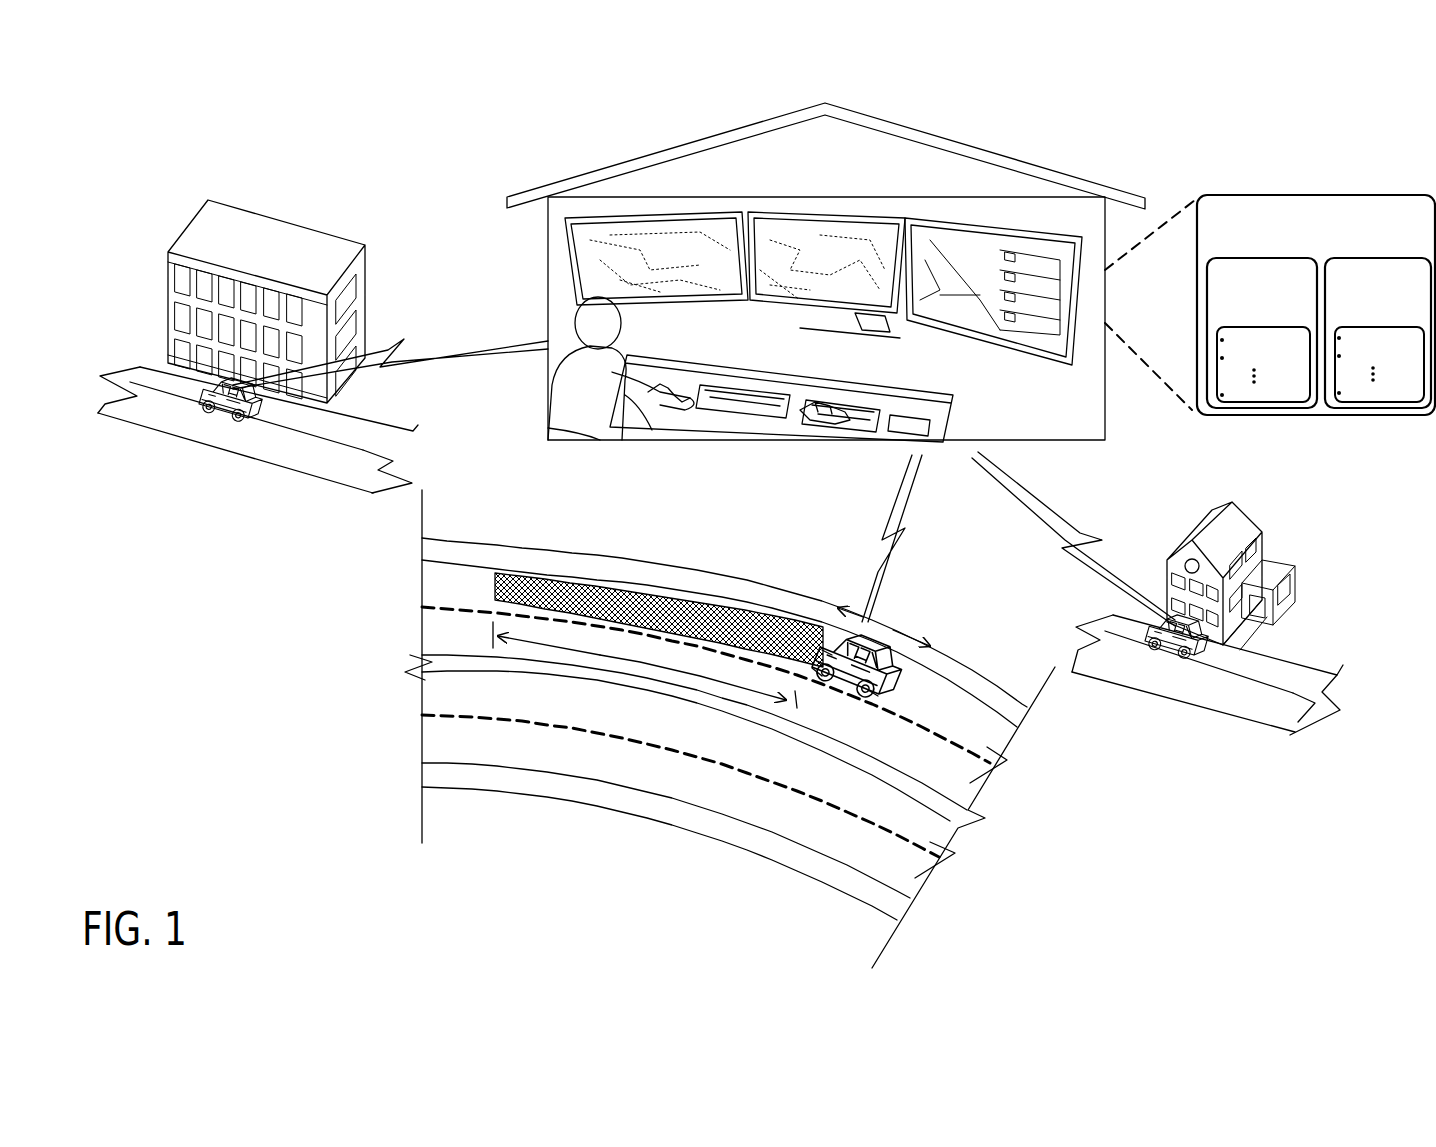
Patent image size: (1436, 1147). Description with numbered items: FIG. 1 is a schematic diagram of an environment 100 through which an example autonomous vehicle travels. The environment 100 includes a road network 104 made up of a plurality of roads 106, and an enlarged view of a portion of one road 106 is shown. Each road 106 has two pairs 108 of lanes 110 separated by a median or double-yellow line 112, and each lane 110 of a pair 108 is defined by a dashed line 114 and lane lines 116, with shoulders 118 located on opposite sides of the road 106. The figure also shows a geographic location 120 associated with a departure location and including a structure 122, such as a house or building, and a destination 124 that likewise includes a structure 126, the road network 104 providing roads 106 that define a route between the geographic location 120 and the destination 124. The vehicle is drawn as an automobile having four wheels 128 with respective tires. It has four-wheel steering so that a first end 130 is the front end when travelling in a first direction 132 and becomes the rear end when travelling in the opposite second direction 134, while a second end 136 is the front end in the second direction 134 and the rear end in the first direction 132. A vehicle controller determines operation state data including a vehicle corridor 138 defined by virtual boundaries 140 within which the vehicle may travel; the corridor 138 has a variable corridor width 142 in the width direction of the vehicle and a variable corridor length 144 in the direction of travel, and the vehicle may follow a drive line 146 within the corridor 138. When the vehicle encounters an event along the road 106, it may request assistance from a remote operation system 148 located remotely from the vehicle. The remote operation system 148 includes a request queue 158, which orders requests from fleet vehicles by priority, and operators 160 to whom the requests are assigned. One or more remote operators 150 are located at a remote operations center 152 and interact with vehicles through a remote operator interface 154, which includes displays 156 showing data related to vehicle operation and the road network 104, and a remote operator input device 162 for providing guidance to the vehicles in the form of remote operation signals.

The environment 100 is at (155, 118).
The road network 104 is at (266, 488).
The road 106 is at (152, 413).
The pair of lanes 108 is at (400, 602).
The lane 110 is at (1007, 760).
The median or double-yellow line 112 is at (770, 717).
The dashed line 114 is at (436, 606).
The lane lines 116 is at (711, 810).
The shoulder 118 is at (548, 558).
The geographic location 120 is at (1276, 515).
The structure 122 is at (1191, 548).
The destination 124 is at (144, 235).
The structure 126 is at (262, 232).
The wheel 128 is at (818, 673).
The first end 130 is at (827, 650).
The first direction 132 is at (868, 610).
The second direction 134 is at (900, 632).
The second end 136 is at (880, 693).
The vehicle corridor 138 is at (762, 625).
The virtual boundaries 140 is at (536, 606).
The corridor width 142 is at (595, 580).
The corridor length 144 is at (645, 665).
The drive line 146 is at (726, 628).
The remote operation system 148 is at (1270, 305).
The remote operator 150 is at (560, 330).
The remote operations center 152 is at (985, 150).
The remote operator interface 154 is at (975, 396).
The display 156 is at (617, 218).
The request queue 158 is at (1262, 333).
The operators 160 is at (1378, 333).
The remote operator input device 162 is at (722, 417).